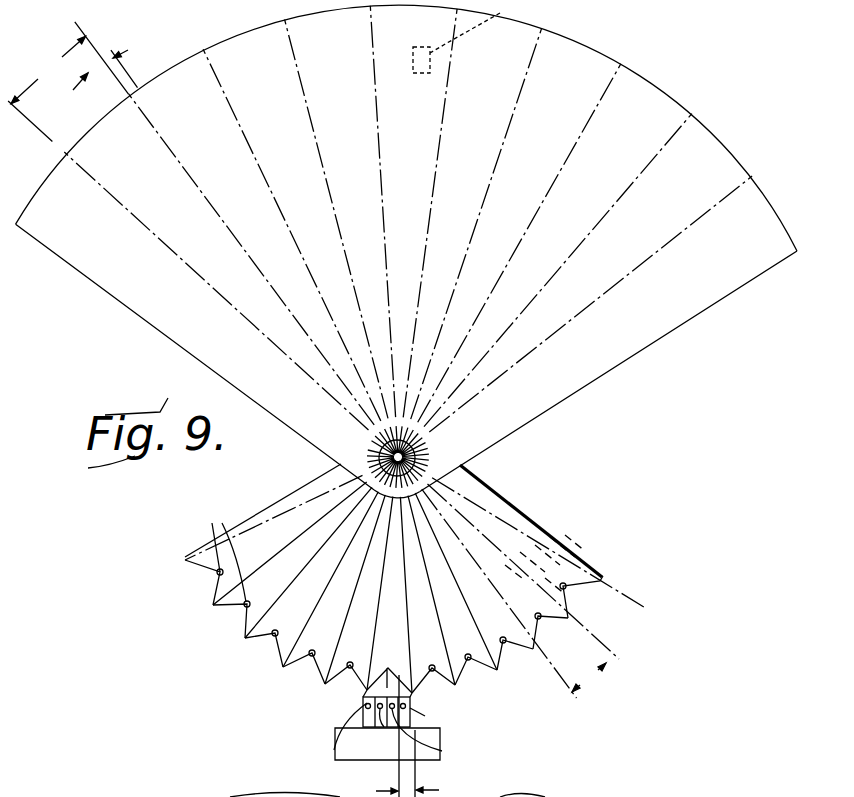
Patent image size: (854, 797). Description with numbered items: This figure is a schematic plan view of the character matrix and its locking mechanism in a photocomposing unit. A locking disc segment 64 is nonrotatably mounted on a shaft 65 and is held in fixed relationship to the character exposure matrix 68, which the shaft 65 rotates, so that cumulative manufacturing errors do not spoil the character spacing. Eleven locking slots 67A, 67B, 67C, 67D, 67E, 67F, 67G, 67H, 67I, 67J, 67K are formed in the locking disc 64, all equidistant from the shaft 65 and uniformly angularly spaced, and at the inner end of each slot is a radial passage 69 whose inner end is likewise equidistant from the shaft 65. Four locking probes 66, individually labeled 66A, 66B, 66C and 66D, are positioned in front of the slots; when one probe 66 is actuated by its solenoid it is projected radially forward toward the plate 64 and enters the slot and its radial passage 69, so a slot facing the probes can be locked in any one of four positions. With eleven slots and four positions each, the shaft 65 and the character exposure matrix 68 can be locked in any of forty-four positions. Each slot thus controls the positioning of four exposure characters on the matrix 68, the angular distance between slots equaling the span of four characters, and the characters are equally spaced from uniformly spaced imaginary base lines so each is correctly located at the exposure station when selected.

The locking disc segment 64 is at (525, 517).
The shaft 65 is at (416, 460).
The locking probes 66 is at (447, 775).
The locking probe 66A is at (339, 719).
The locking probe 66B is at (334, 750).
The locking probe 66C is at (442, 751).
The locking probe 66D is at (425, 716).
The locking slot 67A is at (582, 595).
The locking slot 67B is at (555, 633).
The locking slot 67C is at (507, 650).
The locking slot 67D is at (472, 672).
The locking slot 67E is at (440, 690).
The locking slot 67F is at (387, 667).
The locking slot 67G is at (355, 684).
The locking slot 67H is at (303, 676).
The locking slot 67I is at (268, 652).
The locking slot 67J is at (238, 617).
The locking slot 67K is at (206, 576).
The character exposure matrix 68 is at (580, 345).
The radial passage 69 is at (220, 552).